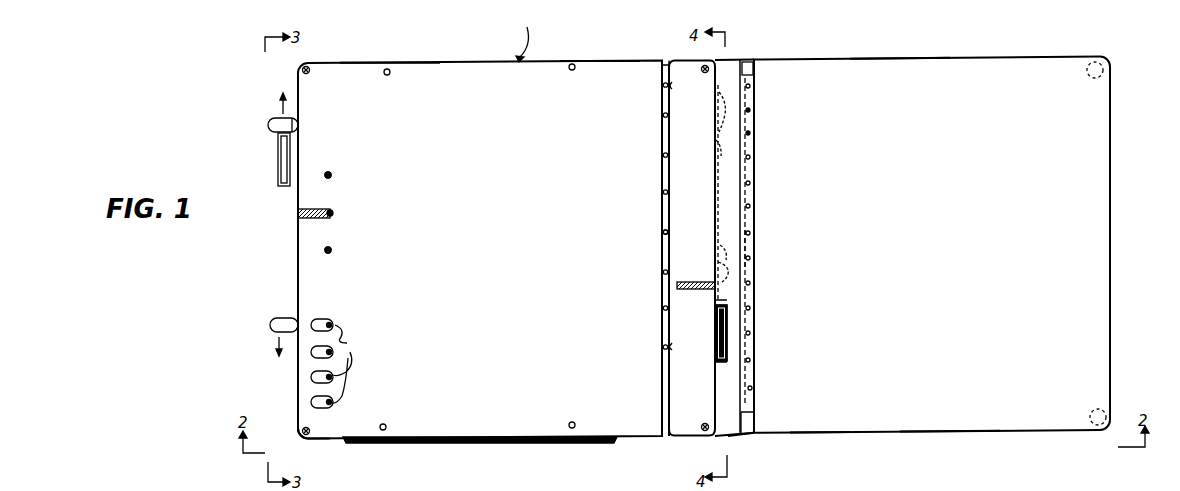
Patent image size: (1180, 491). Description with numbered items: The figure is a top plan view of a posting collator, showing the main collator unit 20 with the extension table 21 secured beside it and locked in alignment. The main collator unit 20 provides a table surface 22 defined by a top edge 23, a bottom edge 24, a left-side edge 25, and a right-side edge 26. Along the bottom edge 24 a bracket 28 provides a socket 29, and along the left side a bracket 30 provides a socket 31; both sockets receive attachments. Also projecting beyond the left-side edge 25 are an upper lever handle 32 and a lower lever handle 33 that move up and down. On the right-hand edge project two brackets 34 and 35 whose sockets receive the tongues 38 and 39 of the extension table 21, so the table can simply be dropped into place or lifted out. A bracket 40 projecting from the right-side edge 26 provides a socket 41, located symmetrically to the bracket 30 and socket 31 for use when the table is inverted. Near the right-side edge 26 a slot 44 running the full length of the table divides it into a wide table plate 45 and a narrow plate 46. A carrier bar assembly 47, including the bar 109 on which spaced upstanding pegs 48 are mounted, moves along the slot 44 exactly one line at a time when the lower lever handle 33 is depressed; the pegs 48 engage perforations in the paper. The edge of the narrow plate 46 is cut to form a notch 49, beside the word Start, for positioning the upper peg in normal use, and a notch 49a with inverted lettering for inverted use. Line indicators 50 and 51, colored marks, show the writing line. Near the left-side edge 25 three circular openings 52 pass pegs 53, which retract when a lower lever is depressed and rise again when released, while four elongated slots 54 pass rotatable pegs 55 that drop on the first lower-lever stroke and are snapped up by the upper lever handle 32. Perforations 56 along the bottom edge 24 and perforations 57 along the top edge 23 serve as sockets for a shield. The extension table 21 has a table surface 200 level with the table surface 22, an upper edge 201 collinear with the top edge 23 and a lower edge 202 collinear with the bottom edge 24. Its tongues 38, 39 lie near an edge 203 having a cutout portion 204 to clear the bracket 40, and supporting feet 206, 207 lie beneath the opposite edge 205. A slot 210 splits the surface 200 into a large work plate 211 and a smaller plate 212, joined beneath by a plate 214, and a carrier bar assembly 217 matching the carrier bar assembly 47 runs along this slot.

The main collator unit 20 is at (513, 35).
The extension table 21 is at (1120, 123).
The table surface 22 is at (512, 248).
The top edge 23 is at (395, 62).
The bottom edge 24 is at (318, 439).
The left-side edge 25 is at (297, 249).
The right-side edge 26 is at (718, 217).
The bracket 28 is at (465, 445).
The socket 29 is at (518, 436).
The bracket 30 is at (293, 149).
The socket 31 is at (276, 155).
The upper lever handle 32 is at (278, 117).
The lower lever handle 33 is at (272, 331).
The bracket 34 is at (727, 153).
The bracket 35 is at (725, 244).
The tongue 38 is at (728, 192).
The tongue 39 is at (729, 271).
The bracket 40 is at (714, 312).
The socket 41 is at (722, 326).
The slot 44 is at (660, 59).
The wide table plate 45 is at (605, 62).
The narrow plate 46 is at (689, 61).
The carrier bar assembly 47 is at (663, 176).
The pegs 48 is at (664, 154).
The notch 49 is at (670, 87).
The notch 49a is at (670, 350).
The line indicator 50 is at (297, 214).
The line indicator 51 is at (705, 270).
The circular openings 52 is at (329, 178).
The pegs 53 is at (330, 173).
The elongated slots 54 is at (313, 398).
The pegs 55 is at (346, 364).
The perforations 56 is at (386, 425).
The perforations 57 is at (390, 74).
The bar 109 is at (664, 232).
The table surface 200 is at (930, 278).
The upper edge 201 is at (889, 57).
The lower edge 202 is at (950, 433).
The edge 203 is at (708, 404).
The cutout portion 204 is at (723, 362).
The edge 205 is at (1110, 310).
The supporting foot 206 is at (1098, 409).
The supporting foot 207 is at (1097, 62).
The slot 210 is at (752, 389).
The large work plate 211 is at (821, 429).
The smaller plate 212 is at (733, 433).
The plate 214 is at (752, 66).
The carrier bar assembly 217 is at (753, 249).